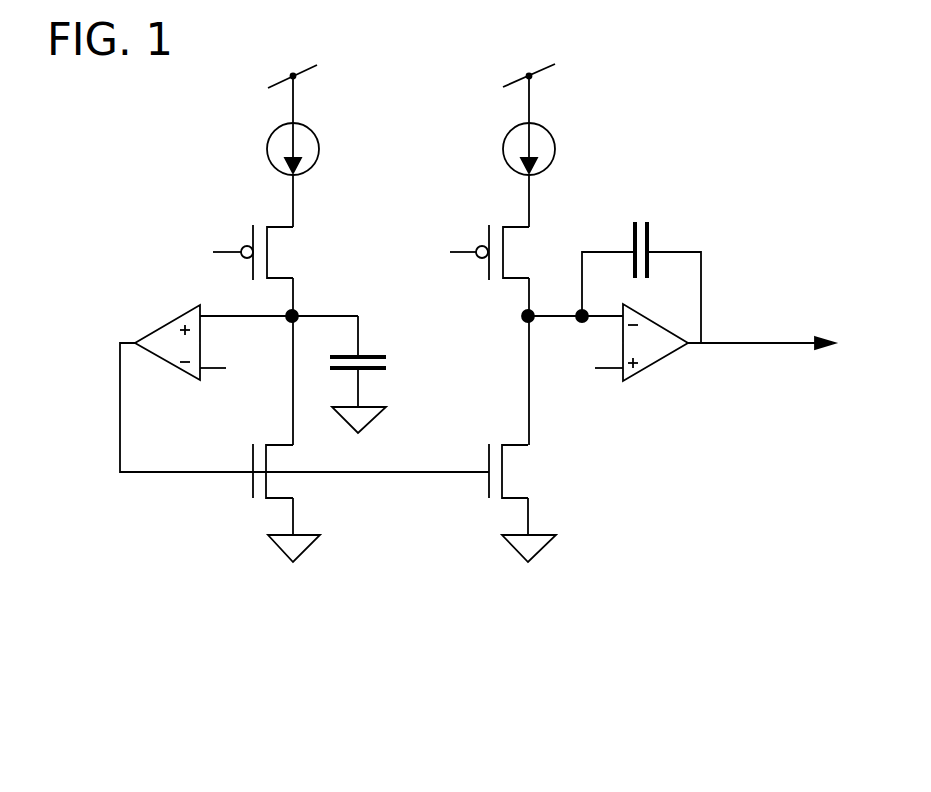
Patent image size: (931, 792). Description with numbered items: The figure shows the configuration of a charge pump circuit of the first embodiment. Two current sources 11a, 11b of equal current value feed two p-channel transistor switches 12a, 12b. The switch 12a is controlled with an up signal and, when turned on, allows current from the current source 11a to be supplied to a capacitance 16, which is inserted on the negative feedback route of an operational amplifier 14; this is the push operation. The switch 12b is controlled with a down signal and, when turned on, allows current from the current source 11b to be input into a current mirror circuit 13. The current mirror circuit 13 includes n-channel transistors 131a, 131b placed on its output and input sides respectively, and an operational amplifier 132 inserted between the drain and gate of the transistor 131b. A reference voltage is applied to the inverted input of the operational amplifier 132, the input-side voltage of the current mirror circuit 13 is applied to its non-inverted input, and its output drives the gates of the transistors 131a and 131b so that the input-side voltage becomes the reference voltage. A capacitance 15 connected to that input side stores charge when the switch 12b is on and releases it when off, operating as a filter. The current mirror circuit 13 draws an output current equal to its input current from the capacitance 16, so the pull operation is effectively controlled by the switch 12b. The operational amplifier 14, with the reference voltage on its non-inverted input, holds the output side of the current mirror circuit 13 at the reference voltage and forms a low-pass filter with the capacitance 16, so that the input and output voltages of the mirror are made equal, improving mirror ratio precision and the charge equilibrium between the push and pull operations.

The current source 11a is at (503, 148).
The current source 11b is at (268, 148).
The switch 12a is at (517, 224).
The switch 12b is at (281, 224).
The current mirror circuit 13 is at (127, 493).
The n-channel transistor 131a is at (515, 443).
The n-channel transistor 131b is at (282, 443).
The operational amplifier 132 is at (172, 365).
The operational amplifier 14 is at (680, 356).
The capacitance 15 is at (375, 352).
The capacitance 16 is at (650, 238).